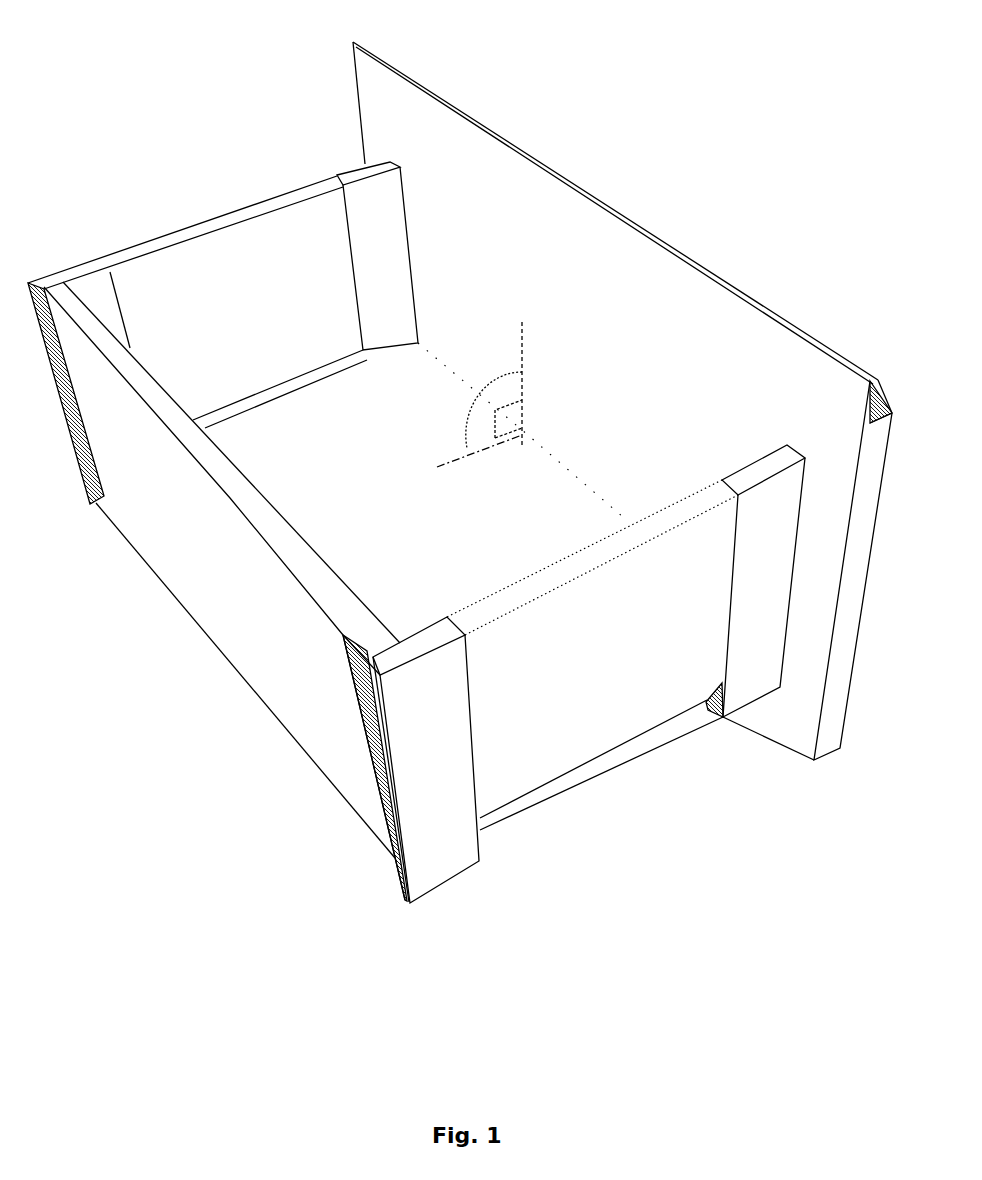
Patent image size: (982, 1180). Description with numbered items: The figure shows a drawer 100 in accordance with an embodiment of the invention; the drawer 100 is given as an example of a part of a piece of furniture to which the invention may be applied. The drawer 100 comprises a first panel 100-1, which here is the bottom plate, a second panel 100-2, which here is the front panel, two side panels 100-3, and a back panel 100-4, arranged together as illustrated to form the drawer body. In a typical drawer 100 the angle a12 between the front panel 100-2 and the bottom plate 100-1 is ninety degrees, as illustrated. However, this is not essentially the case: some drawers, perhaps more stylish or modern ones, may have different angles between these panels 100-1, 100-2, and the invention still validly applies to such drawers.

The drawer 100 is at (197, 108).
The first panel 100-1 is at (456, 528).
The second panel 100-2 is at (590, 238).
The side panels 100-3 is at (212, 258).
The back panel 100-4 is at (243, 607).
The angle a12 is at (479, 394).